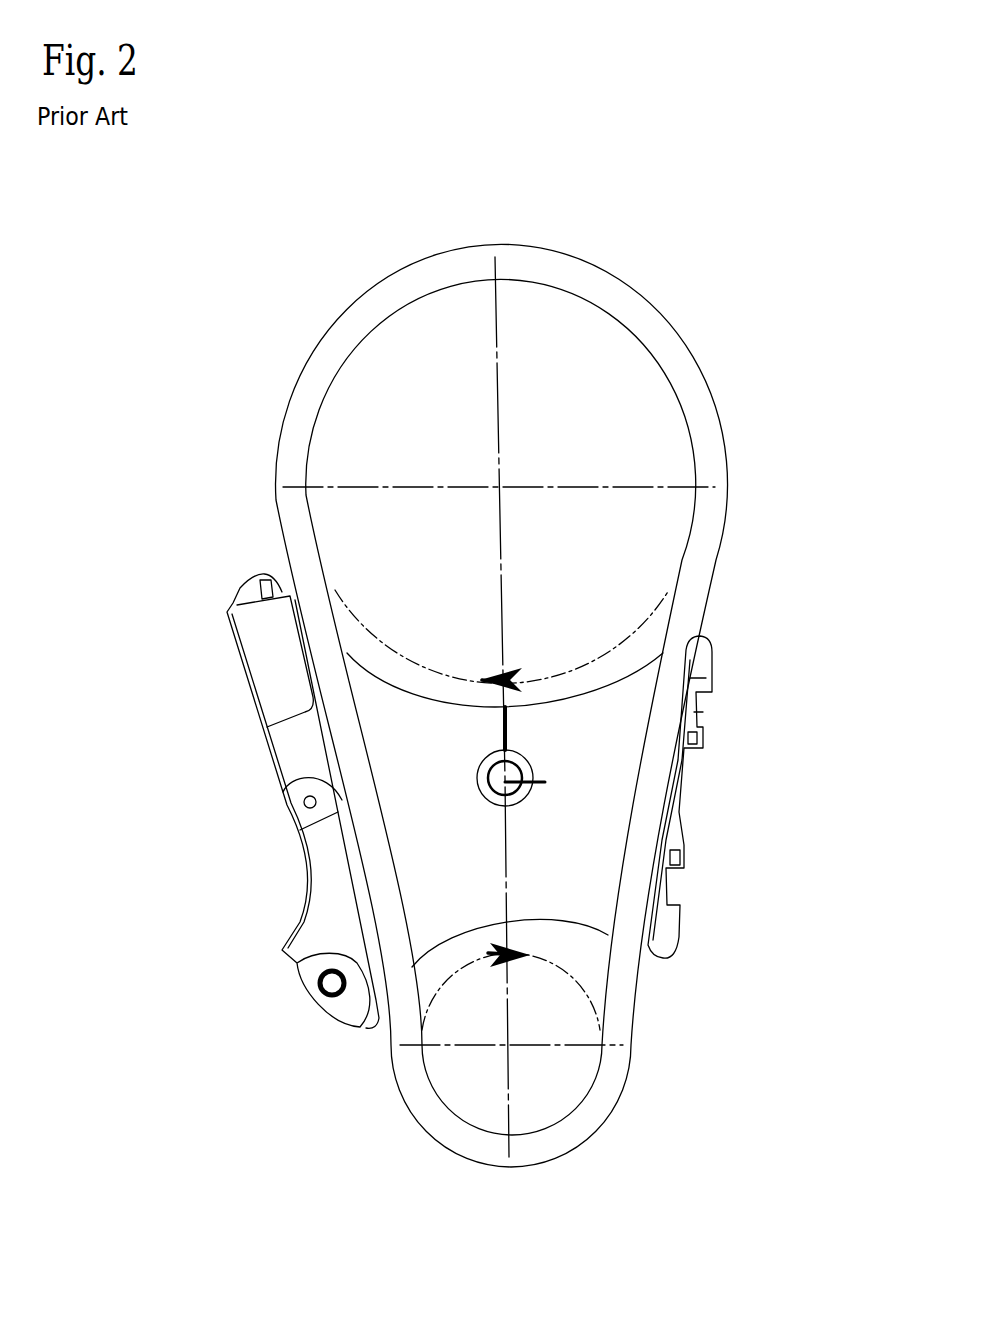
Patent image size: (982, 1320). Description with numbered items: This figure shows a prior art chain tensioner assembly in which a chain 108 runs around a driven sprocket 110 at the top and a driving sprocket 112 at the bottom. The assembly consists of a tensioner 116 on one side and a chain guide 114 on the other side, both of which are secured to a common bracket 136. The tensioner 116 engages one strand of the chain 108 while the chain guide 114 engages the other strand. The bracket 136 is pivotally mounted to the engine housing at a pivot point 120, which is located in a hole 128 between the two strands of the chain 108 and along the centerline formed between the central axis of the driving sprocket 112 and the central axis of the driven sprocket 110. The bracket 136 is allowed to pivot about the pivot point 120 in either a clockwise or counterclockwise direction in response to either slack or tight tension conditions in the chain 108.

The chain 108 is at (690, 385).
The driven sprocket 110 is at (527, 328).
The driving sprocket 112 is at (560, 1068).
The chain guide 114 is at (685, 812).
The tensioner 116 is at (293, 910).
The pivot point 120 is at (520, 782).
The hole 128 is at (478, 797).
The bracket 136 is at (398, 765).